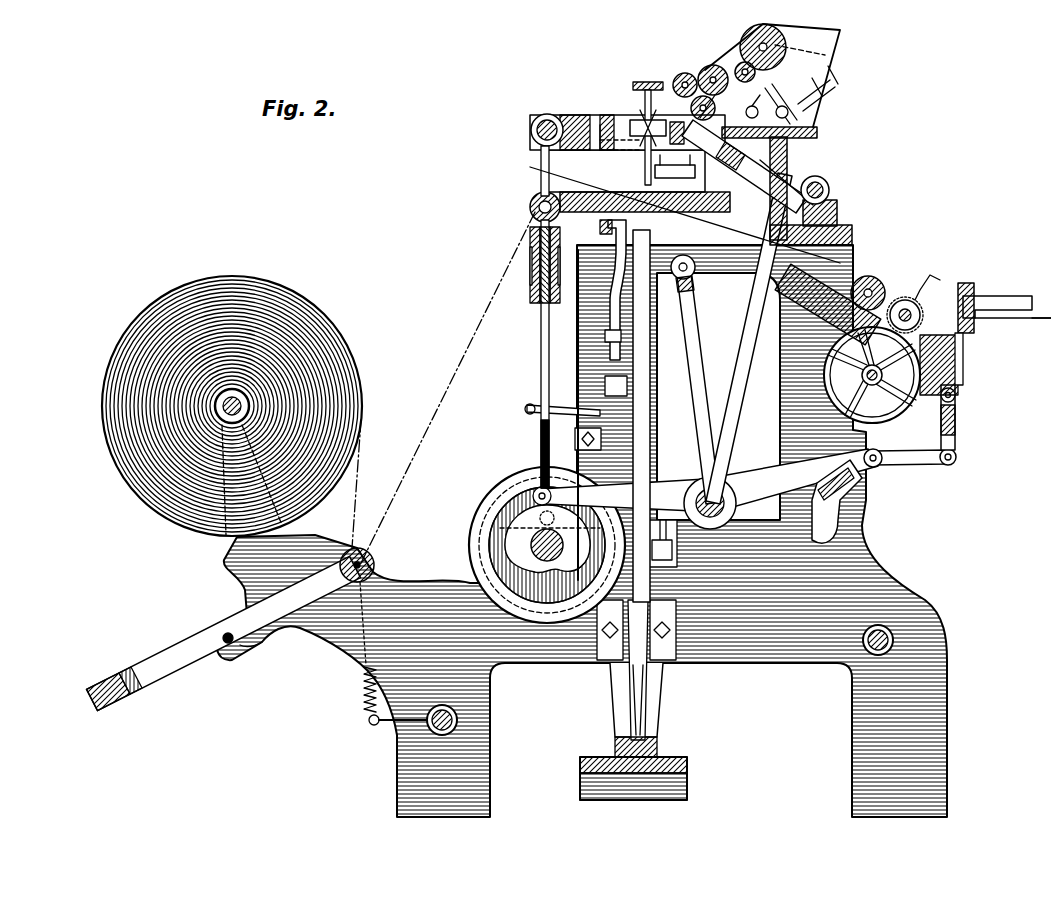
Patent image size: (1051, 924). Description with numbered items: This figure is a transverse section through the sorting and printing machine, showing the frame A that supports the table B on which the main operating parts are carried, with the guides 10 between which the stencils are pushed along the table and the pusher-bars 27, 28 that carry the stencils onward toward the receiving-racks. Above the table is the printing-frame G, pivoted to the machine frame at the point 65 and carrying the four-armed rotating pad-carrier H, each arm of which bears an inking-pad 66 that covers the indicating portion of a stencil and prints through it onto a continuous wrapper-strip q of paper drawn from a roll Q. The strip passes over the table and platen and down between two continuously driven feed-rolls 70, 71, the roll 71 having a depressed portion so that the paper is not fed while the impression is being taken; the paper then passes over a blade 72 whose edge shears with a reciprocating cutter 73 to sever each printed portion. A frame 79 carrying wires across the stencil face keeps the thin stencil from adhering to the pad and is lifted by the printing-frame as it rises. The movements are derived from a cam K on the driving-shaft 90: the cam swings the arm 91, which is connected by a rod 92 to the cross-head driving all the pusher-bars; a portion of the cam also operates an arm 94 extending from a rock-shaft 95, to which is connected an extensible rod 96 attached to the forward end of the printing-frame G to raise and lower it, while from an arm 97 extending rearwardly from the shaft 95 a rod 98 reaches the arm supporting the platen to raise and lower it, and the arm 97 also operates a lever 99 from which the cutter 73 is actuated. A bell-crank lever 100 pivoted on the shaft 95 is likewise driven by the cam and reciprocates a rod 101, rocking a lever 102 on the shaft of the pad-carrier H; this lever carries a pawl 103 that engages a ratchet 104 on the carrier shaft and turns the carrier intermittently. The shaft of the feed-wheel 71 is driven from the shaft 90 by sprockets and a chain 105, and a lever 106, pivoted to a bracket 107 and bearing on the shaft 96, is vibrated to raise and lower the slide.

The frame A is at (581, 531).
The table B is at (530, 212).
The printing-frame G is at (789, 180).
The pad-carrier H is at (640, 125).
The cam K is at (492, 505).
The roll Q is at (104, 380).
The wrapper-strip q is at (480, 322).
The guides 10 is at (668, 180).
The pusher-bar 27 is at (685, 191).
The pusher-bar 28 is at (578, 222).
The pivot point 65 is at (829, 188).
The inking-pad 66 is at (650, 121).
The feed-roll 70 is at (535, 200).
The feed-roll 71 is at (875, 383).
The blade 72 is at (913, 329).
The cutter 73 is at (968, 292).
The frame 79 is at (675, 157).
The driving-shaft 90 is at (530, 548).
The arm 91 is at (636, 687).
The rod 92 is at (625, 411).
The arm 94 is at (705, 480).
The rock-shaft 95 is at (712, 480).
The extensible rod 96 is at (540, 376).
The arm 97 is at (820, 505).
The rod 98 is at (718, 372).
The lever 99 is at (876, 480).
The bell-crank lever 100 is at (730, 368).
The rod 101 is at (625, 171).
The lever 102 is at (540, 160).
The pawl 103 is at (612, 120).
The ratchet 104 is at (672, 128).
The chain 105 is at (636, 452).
The lever 106 is at (540, 432).
The bracket 107 is at (560, 445).